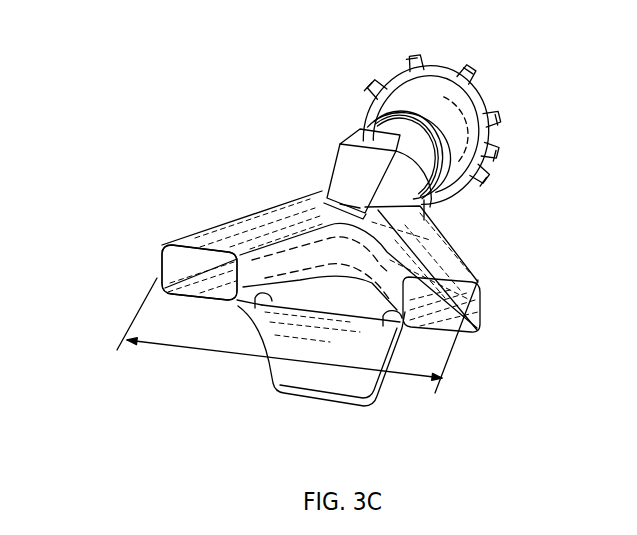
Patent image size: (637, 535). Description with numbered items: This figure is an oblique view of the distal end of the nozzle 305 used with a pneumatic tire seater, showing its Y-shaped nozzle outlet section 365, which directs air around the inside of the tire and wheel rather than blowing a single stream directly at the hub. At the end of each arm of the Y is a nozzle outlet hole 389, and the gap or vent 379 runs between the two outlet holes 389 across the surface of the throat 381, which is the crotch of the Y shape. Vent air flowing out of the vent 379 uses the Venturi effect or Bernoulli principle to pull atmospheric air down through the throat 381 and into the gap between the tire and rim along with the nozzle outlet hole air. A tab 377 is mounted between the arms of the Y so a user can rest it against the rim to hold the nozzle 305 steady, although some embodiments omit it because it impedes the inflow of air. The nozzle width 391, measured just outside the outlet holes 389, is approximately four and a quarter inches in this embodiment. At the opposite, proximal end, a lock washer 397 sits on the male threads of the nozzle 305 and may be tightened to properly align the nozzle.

The nozzle 305 is at (260, 150).
The nozzle outlet section 365 is at (177, 250).
The nozzle outlet holes 389 is at (173, 257).
The vent 379 is at (382, 278).
The tab 377 is at (272, 380).
The throat 381 is at (345, 298).
The nozzle width 391 is at (203, 348).
The lock washer 397 is at (488, 99).